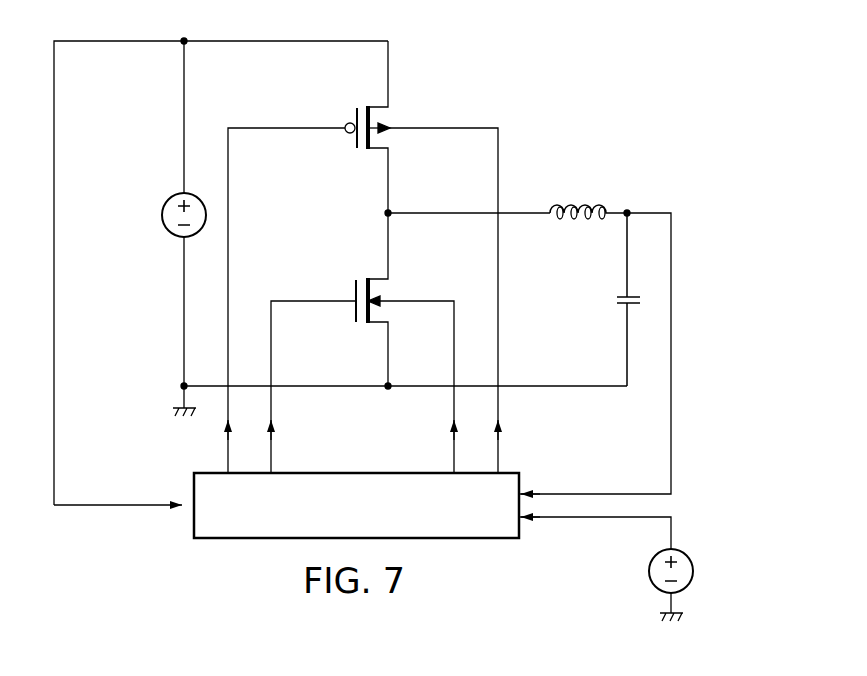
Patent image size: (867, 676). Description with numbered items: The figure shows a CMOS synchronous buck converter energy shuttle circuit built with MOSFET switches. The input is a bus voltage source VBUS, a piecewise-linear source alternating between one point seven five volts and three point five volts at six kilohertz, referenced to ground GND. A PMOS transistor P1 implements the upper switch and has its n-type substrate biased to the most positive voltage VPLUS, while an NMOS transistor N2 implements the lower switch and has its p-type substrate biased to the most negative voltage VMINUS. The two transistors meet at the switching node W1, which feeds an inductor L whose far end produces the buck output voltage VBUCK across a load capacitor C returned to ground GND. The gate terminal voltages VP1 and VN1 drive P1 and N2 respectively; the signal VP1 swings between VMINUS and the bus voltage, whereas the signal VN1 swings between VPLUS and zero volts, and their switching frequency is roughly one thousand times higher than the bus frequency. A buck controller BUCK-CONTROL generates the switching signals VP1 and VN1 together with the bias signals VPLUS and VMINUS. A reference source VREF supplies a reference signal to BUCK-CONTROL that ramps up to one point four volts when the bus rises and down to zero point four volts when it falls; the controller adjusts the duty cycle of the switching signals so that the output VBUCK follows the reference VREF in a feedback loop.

The bus voltage source VBUS is at (151, 213).
The ground GND is at (396, 412).
The PMOS transistor P1 is at (367, 127).
The gate terminal voltage of P1 VP1 is at (286, 283).
The most positive bias voltage VPLUS is at (443, 283).
The switching node W1 is at (451, 219).
The NMOS transistor N2 is at (372, 301).
The gate terminal voltage of N2 VN1 is at (313, 370).
The most negative bias voltage VMINUS is at (424, 371).
The inductor L is at (579, 200).
The buck output voltage VBUCK is at (602, 336).
The load capacitor C is at (616, 299).
The buck controller BUCK-CONTROL is at (356, 505).
The reference voltage source VREF is at (630, 582).